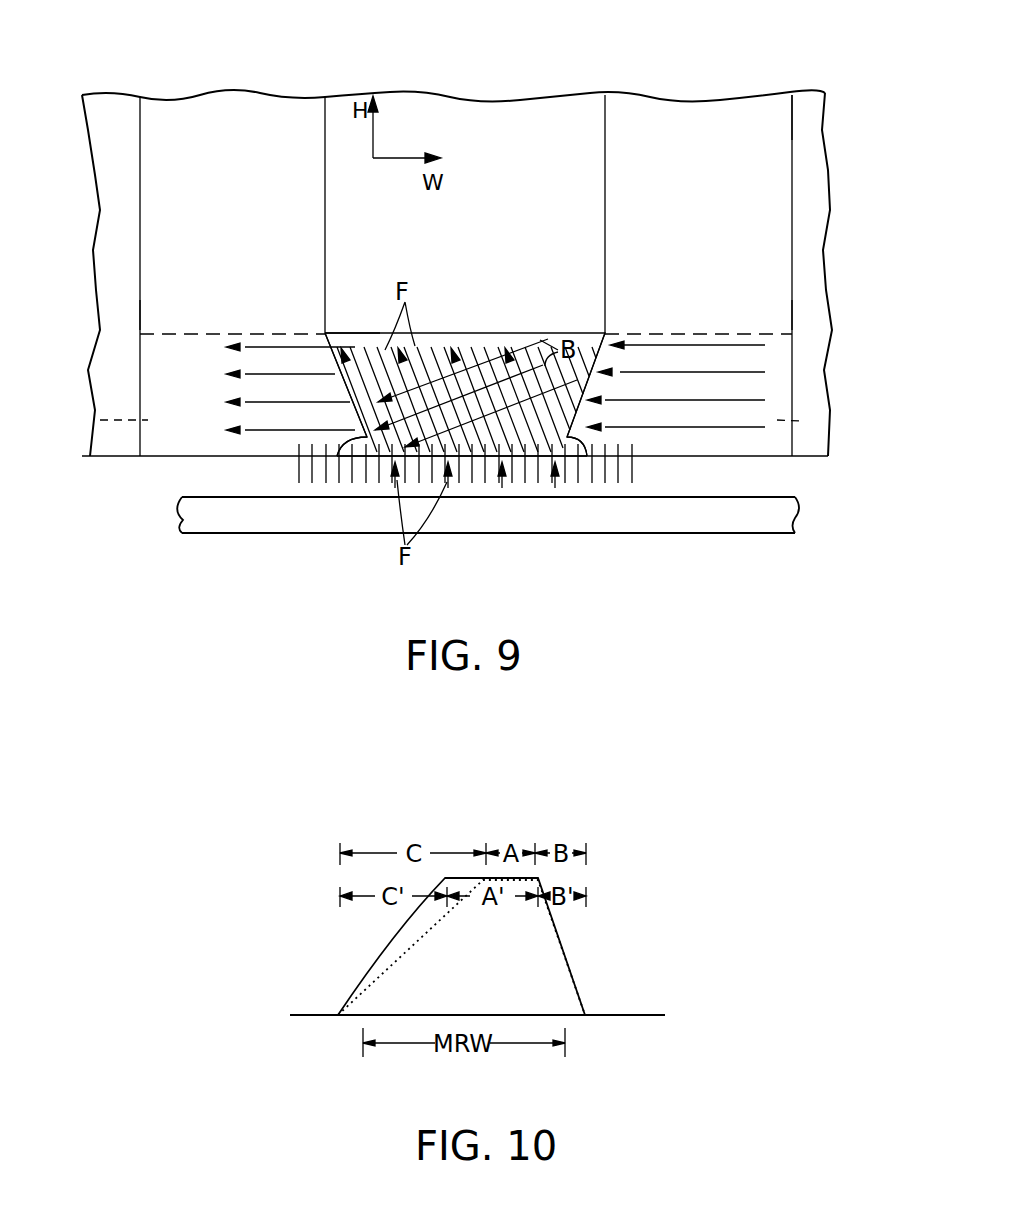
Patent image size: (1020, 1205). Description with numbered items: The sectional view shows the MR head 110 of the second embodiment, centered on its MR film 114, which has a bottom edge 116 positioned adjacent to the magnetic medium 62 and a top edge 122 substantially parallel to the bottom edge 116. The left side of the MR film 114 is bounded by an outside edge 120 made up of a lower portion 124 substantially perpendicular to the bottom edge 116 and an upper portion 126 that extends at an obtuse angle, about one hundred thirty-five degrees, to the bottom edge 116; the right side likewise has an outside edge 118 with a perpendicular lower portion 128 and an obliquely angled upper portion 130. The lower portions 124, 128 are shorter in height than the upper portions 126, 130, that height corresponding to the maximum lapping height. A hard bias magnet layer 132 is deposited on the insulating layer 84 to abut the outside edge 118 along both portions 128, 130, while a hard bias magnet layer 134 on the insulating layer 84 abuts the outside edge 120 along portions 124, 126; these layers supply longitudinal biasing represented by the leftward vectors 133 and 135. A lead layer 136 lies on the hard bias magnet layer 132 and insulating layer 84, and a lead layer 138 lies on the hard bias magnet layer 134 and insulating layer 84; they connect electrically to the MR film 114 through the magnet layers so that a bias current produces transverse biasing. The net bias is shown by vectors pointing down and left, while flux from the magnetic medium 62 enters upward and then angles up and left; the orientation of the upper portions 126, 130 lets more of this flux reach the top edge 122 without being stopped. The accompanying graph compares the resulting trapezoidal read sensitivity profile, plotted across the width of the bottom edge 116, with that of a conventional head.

The MR head 110 is at (798, 80).
The insulating layer 84 is at (810, 125).
The magnetic medium 62 is at (762, 520).
The MR film 114 is at (583, 345).
The bottom edge 116 is at (520, 470).
The outside edge 118 is at (602, 345).
The outside edge 120 is at (338, 351).
The top edge 122 is at (357, 333).
The lower portion 124 is at (362, 438).
The upper portion 126 is at (343, 363).
The lower portion 128 is at (586, 456).
The upper portion 130 is at (603, 368).
The hard bias magnet layer 132 is at (800, 421).
The vector 133 is at (686, 428).
The hard bias magnet layer 134 is at (100, 420).
The vector 135 is at (263, 432).
The lead layer 136 is at (775, 307).
The lead layer 138 is at (152, 314).